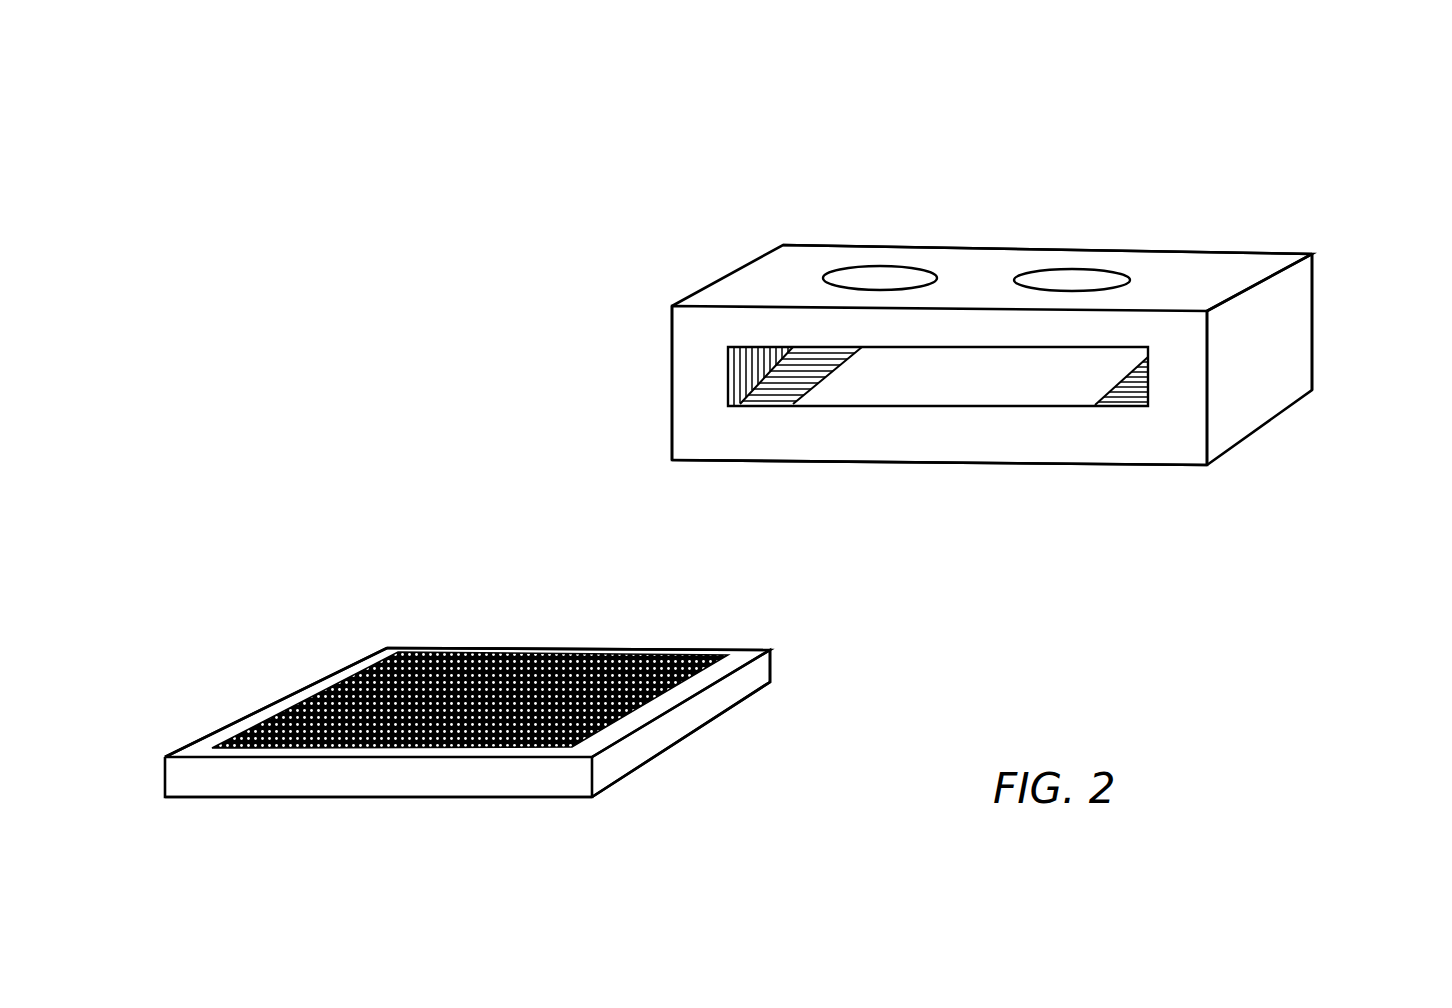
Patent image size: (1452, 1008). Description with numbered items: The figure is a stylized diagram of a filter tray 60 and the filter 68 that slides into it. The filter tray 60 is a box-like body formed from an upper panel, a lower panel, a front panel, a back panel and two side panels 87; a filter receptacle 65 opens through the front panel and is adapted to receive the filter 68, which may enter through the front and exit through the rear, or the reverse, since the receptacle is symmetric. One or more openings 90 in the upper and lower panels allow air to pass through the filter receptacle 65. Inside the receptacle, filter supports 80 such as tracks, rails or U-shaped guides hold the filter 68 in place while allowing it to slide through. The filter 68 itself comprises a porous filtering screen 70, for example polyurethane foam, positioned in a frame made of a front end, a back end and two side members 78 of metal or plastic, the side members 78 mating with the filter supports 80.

The filter tray 60 is at (743, 185).
The filter receptacle 65 is at (875, 383).
The filter 68 is at (662, 830).
The filtering screen 70 is at (452, 690).
The side members 78 is at (290, 697).
The filter supports 80 is at (1123, 390).
The side panels 87 is at (672, 345).
The openings 90 is at (1085, 270).